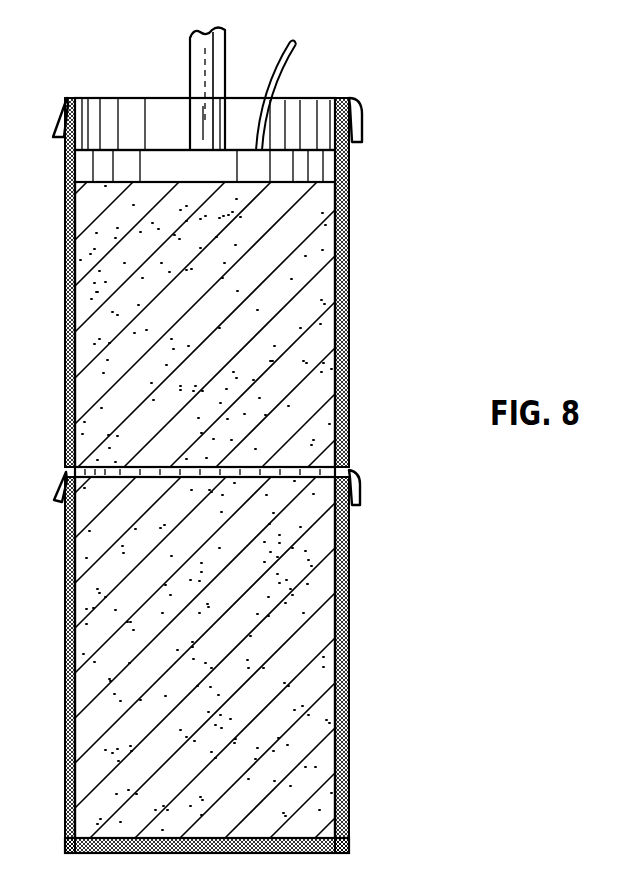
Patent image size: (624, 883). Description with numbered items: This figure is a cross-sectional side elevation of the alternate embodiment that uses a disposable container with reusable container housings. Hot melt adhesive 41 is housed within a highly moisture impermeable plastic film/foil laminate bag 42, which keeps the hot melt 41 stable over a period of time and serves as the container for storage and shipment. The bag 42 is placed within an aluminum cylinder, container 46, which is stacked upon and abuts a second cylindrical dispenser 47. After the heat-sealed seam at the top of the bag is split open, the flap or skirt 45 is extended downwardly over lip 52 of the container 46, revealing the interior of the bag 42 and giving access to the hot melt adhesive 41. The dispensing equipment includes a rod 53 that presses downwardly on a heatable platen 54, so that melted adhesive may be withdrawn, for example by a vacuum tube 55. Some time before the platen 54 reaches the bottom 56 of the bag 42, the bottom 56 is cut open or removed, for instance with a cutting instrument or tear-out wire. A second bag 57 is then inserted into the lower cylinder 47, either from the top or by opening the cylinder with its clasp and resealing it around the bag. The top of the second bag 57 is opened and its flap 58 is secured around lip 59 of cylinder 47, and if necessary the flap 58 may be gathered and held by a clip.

The hot melt adhesive 41 is at (322, 291).
The plastic film/foil laminate bag 42 is at (344, 346).
The flap or skirt 45 is at (362, 130).
The container 46 is at (344, 219).
The dispenser 47 is at (343, 656).
The lip 52 is at (67, 97).
The rod 53 is at (190, 50).
The heatable platen 54 is at (93, 162).
The vacuum tube 55 is at (300, 54).
The bottom 56 is at (300, 464).
The second bag 57 is at (343, 777).
The flap 58 is at (360, 493).
The lip 59 is at (63, 498).